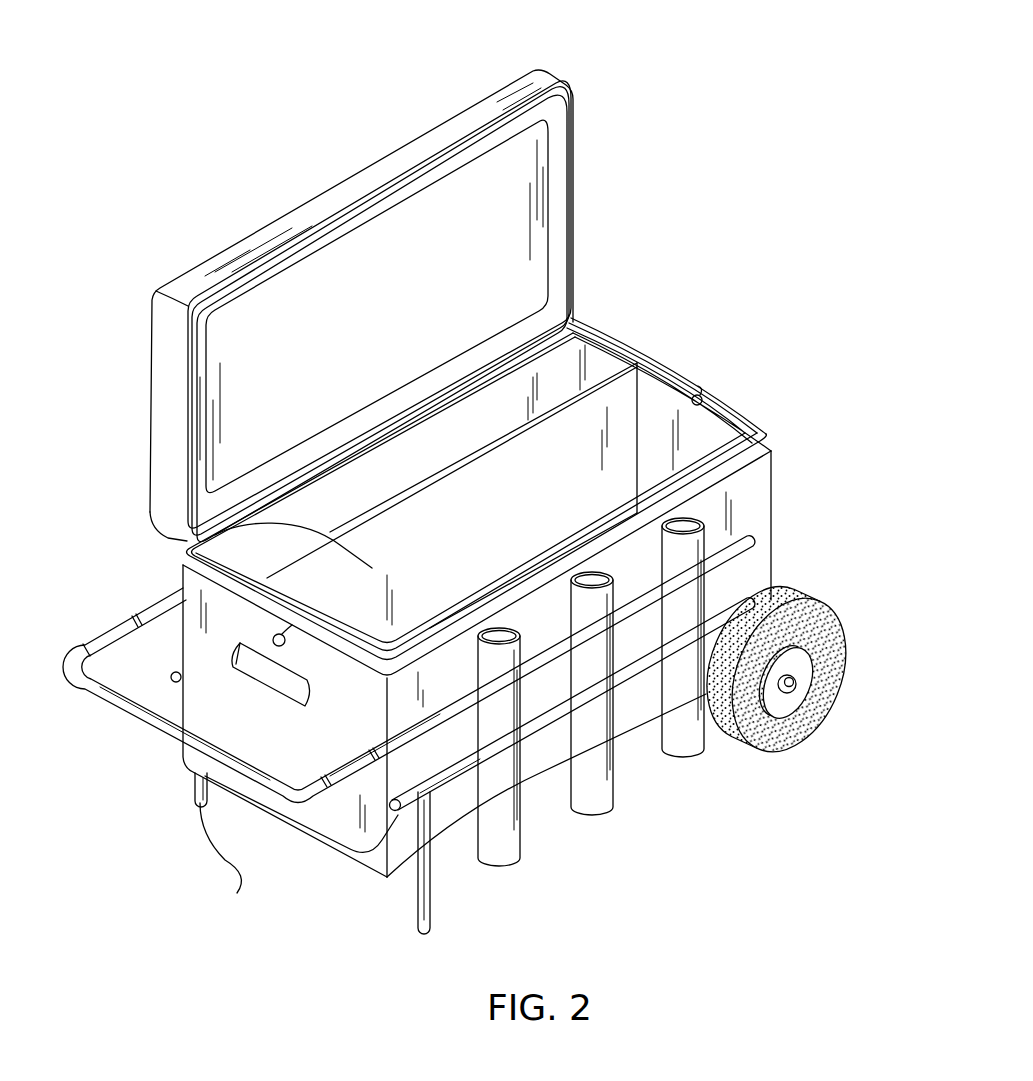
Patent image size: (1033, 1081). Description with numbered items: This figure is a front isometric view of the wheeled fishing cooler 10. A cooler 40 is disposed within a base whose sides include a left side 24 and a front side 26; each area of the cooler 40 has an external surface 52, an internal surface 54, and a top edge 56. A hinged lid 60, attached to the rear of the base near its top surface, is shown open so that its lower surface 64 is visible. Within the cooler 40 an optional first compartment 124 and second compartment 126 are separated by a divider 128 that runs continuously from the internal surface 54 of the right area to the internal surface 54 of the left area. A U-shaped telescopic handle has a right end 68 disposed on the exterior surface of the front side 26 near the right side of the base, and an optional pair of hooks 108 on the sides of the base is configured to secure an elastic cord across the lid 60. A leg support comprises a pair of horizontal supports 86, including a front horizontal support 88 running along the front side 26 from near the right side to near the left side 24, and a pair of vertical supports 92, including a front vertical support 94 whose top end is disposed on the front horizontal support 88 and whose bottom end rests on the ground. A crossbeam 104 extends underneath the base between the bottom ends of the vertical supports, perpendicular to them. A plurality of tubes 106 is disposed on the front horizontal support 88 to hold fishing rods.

The wheeled fishing cooler 10 is at (458, 483).
The left side 24 is at (203, 620).
The front side 26 is at (765, 483).
The cooler 40 is at (183, 643).
The external surface 52 is at (280, 645).
The internal surface 54 is at (667, 413).
The top edge 56 is at (180, 548).
The hinged lid 60 is at (390, 298).
The lower surface 64 is at (500, 200).
The right end 68 is at (753, 536).
The pair of horizontal supports 86 is at (183, 685).
The front horizontal support 88 is at (508, 698).
The pair of vertical supports 92 is at (413, 928).
The front vertical support 94 is at (398, 800).
The crossbeam 104 is at (413, 866).
The plurality of tubes 106 is at (597, 670).
The pair of hooks 108 is at (703, 394).
The first compartment 124 is at (193, 543).
The second compartment 126 is at (555, 380).
The divider 128 is at (615, 378).